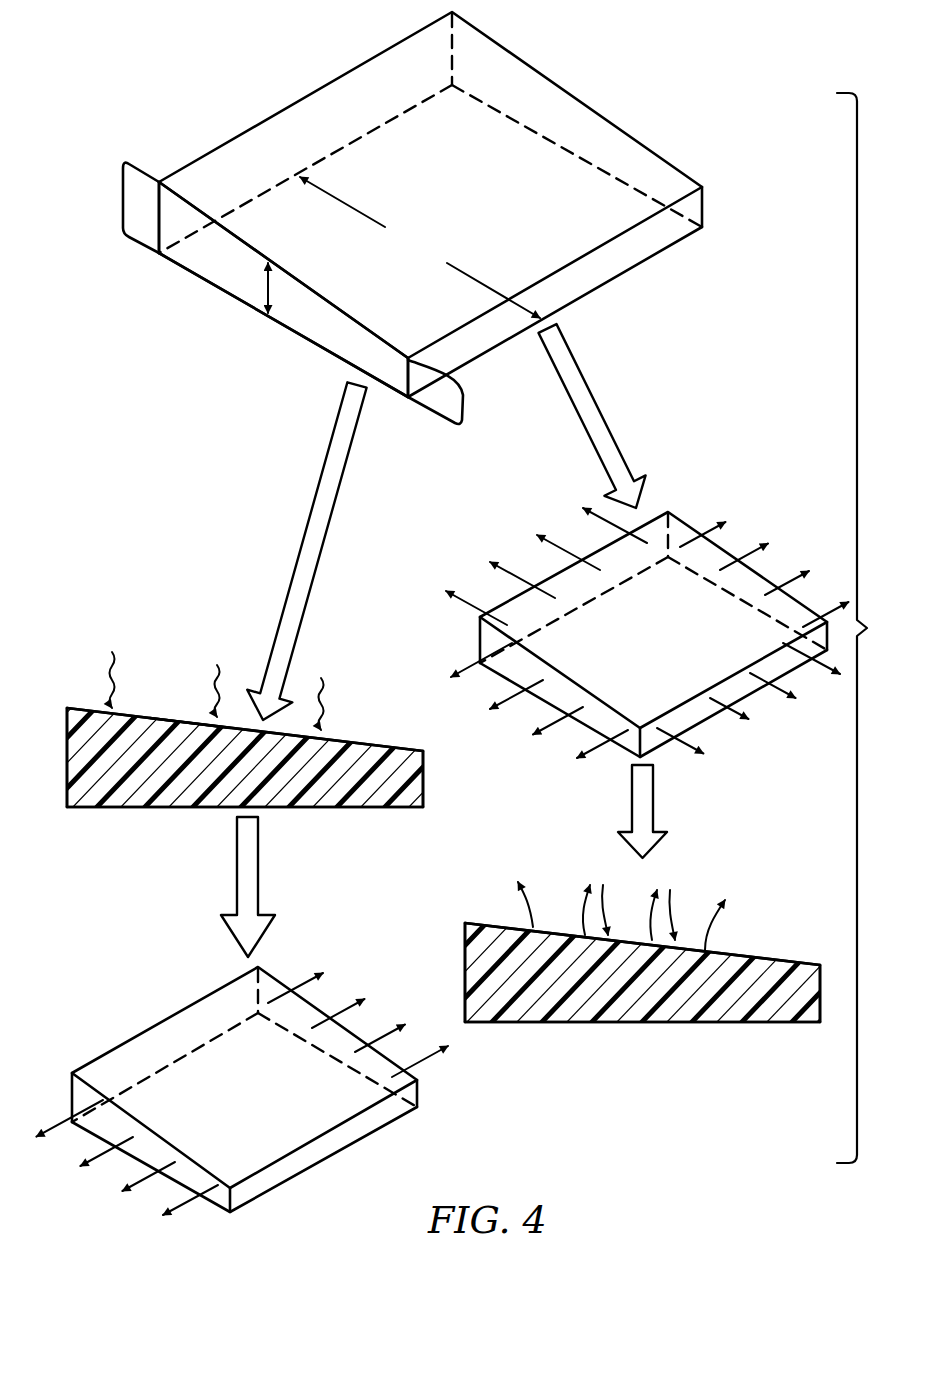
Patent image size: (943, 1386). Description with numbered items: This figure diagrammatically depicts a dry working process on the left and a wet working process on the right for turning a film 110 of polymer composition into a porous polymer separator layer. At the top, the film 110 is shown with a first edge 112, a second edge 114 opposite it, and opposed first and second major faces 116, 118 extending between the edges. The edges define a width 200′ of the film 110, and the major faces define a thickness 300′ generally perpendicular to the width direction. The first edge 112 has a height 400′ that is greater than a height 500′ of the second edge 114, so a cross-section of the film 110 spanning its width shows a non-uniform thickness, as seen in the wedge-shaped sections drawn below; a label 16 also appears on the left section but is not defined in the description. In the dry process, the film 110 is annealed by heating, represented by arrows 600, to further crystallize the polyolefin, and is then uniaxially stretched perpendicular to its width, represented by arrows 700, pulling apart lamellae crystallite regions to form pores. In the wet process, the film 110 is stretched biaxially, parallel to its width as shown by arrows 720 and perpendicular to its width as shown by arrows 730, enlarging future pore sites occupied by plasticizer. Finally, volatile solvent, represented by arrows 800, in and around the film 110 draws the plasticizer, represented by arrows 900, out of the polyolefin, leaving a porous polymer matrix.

The film 110 is at (201, 79).
The first edge 112 is at (157, 220).
The second edge 114 is at (427, 403).
The first major face 116 is at (240, 230).
The second major face 118 is at (290, 333).
The sheet material 16 is at (185, 720).
The width 200′ is at (440, 251).
The thickness 300′ is at (263, 285).
The height of first edge 400′ is at (120, 198).
The height of second edge 500′ is at (470, 411).
The annealing heat arrows 600 is at (217, 676).
The uniaxial stretching arrows 700 is at (242, 1094).
The biaxial stretching arrows parallel to width 720 is at (643, 631).
The biaxial stretching arrows perpendicular to width 730 is at (650, 640).
The volatile solvent arrows 800 is at (632, 899).
The plasticizer arrows 900 is at (619, 904).